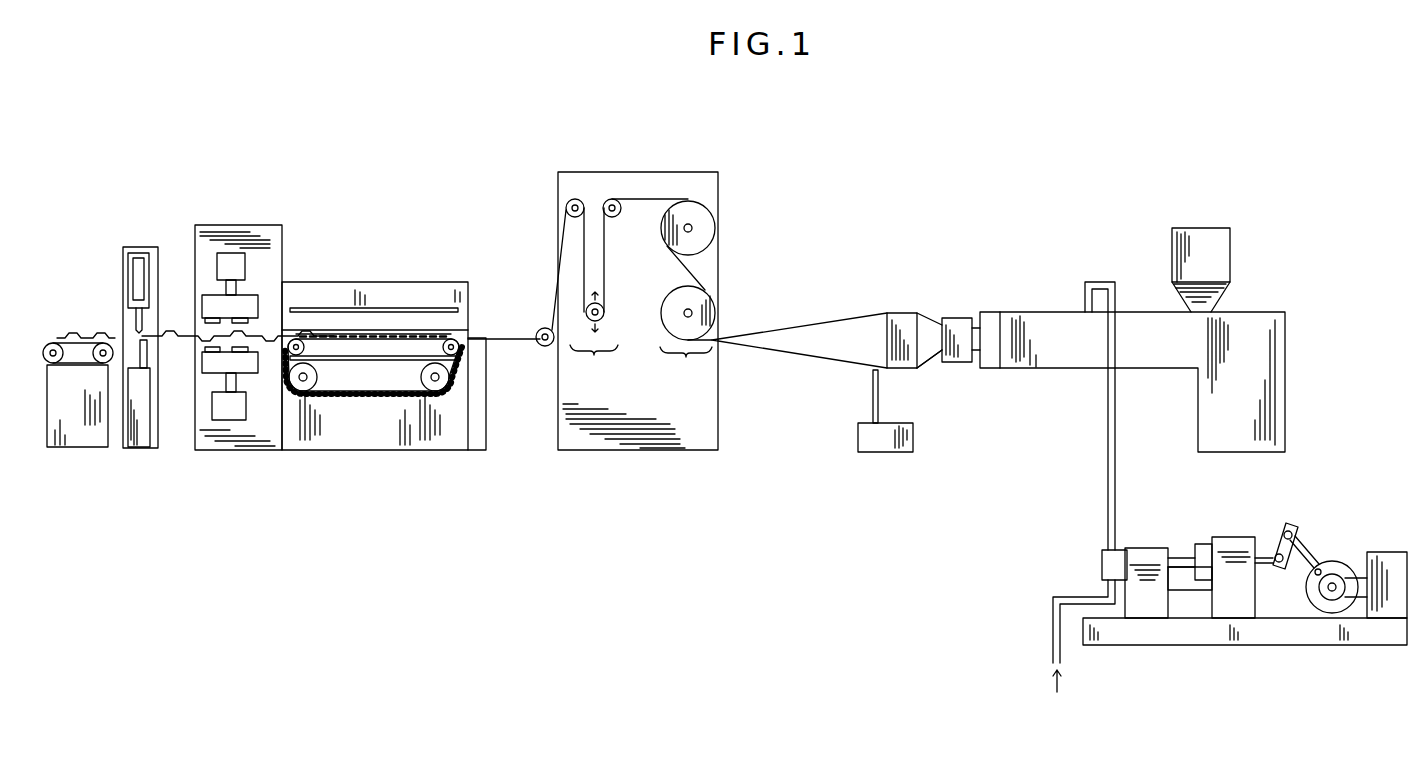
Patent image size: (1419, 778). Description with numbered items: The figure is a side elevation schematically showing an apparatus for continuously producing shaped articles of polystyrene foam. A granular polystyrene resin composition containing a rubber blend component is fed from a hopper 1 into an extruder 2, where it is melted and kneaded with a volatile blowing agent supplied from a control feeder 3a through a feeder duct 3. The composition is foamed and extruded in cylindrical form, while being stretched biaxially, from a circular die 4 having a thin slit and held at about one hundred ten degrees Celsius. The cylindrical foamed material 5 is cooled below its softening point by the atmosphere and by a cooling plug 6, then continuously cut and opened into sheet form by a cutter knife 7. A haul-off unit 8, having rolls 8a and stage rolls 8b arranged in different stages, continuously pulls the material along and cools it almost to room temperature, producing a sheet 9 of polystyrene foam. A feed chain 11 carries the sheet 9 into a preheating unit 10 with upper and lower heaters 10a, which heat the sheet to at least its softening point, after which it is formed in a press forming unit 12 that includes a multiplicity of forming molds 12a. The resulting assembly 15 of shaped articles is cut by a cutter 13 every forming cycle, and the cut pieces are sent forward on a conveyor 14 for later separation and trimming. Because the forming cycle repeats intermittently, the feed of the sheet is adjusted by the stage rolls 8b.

The hopper 1 is at (1200, 228).
The extruder 2 is at (1277, 332).
The feeder duct 3 is at (1108, 450).
The control feeder 3a is at (1188, 640).
The circular die 4 is at (955, 318).
The cylindrical foamed material 5 is at (927, 318).
The cooling plug 6 is at (900, 370).
The cutter knife 7 is at (882, 452).
The haul-off unit 8 is at (635, 342).
The rolls 8a is at (687, 299).
The stage rolls 8b is at (627, 298).
The sheet 9 is at (520, 346).
The preheating unit 10 is at (384, 378).
The upper and lower heaters 10a is at (380, 360).
The feed chain 11 is at (352, 392).
The press forming unit 12 is at (260, 365).
The forming molds 12a is at (255, 352).
The cutter 13 is at (128, 450).
The conveyor 14 is at (52, 340).
The assembly of shaped articles 15 is at (175, 330).